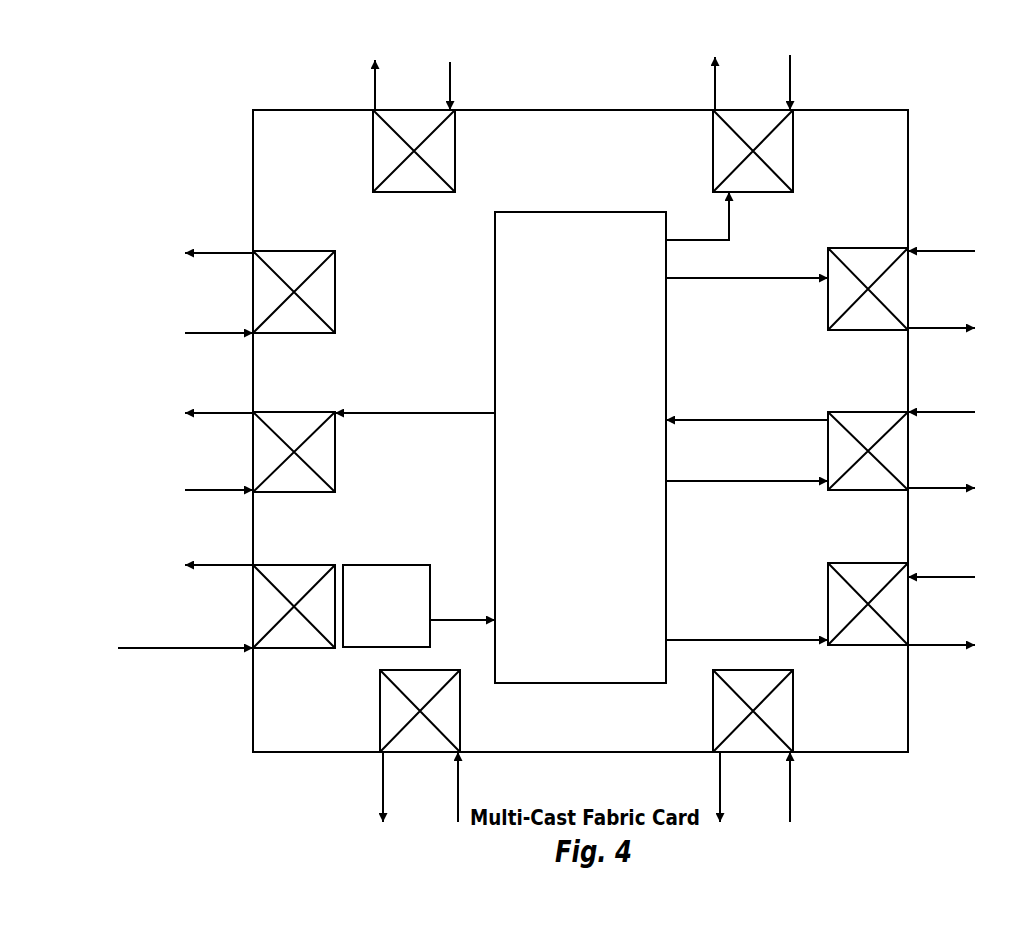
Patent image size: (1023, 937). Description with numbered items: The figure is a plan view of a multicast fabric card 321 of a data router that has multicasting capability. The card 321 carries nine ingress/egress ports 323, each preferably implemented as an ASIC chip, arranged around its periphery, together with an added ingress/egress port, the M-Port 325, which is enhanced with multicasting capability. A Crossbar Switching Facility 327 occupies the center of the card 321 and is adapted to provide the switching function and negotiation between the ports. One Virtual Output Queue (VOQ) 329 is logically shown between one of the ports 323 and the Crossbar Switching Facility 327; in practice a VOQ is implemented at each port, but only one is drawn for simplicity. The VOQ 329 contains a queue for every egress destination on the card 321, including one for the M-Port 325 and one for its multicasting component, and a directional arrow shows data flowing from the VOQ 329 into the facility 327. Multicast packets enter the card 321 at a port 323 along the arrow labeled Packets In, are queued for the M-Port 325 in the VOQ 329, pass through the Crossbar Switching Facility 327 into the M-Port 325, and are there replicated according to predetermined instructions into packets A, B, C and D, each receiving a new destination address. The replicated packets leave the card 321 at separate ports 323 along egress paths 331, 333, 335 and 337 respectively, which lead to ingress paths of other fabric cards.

The multicast fabric card 321 is at (250, 205).
The ingress/egress port 323 is at (793, 145).
The M-Port 325 is at (870, 412).
The crossbar switching facility 327 is at (583, 212).
The virtual output queue 329 is at (430, 595).
The egress path 331 is at (222, 416).
The egress path 333 is at (712, 93).
The egress path 335 is at (933, 330).
The egress path 337 is at (928, 645).